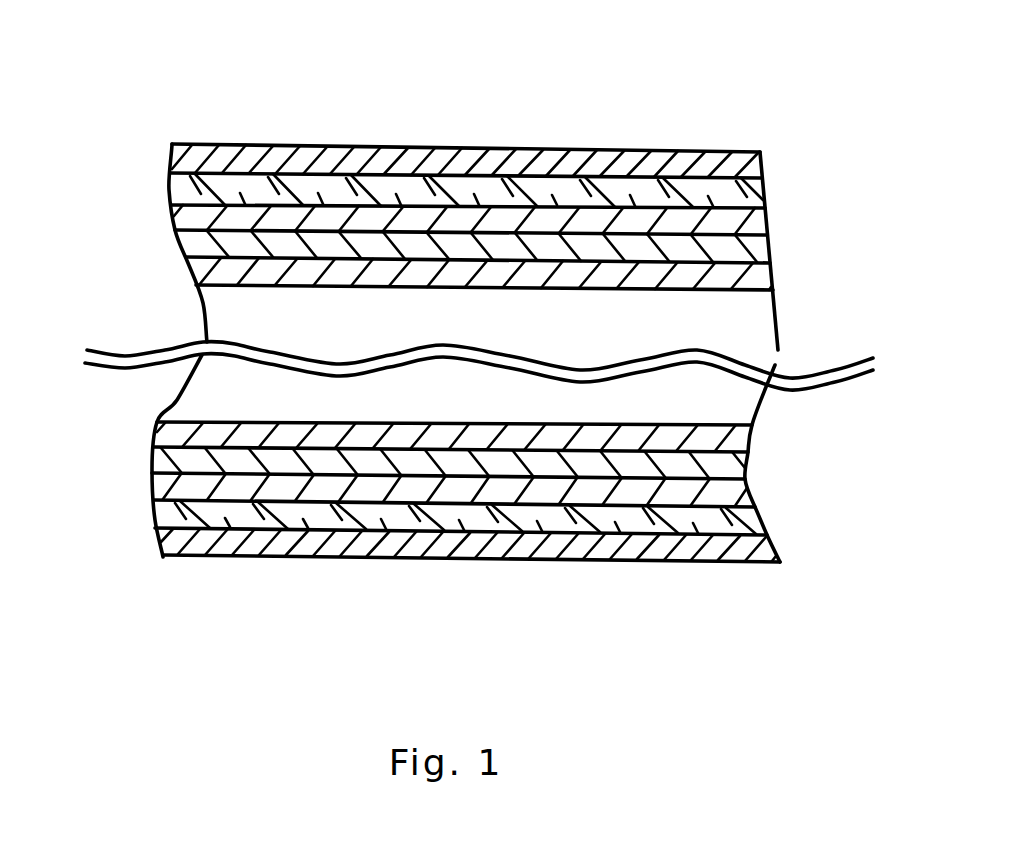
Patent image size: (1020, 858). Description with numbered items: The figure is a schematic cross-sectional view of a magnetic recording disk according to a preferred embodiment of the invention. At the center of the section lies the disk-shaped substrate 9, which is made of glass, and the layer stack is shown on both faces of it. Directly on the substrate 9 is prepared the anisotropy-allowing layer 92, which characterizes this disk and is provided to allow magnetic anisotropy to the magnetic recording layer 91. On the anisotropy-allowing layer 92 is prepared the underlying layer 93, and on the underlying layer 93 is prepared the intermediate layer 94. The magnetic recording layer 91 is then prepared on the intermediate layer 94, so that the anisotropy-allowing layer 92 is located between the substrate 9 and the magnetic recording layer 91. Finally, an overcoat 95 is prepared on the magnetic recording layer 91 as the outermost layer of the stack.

The substrate 9 is at (743, 337).
The magnetic recording layer 91 is at (743, 190).
The anisotropy-allowing layer 92 is at (230, 273).
The underlying layer 93 is at (737, 255).
The intermediate layer 94 is at (747, 225).
The overcoat 95 is at (722, 163).